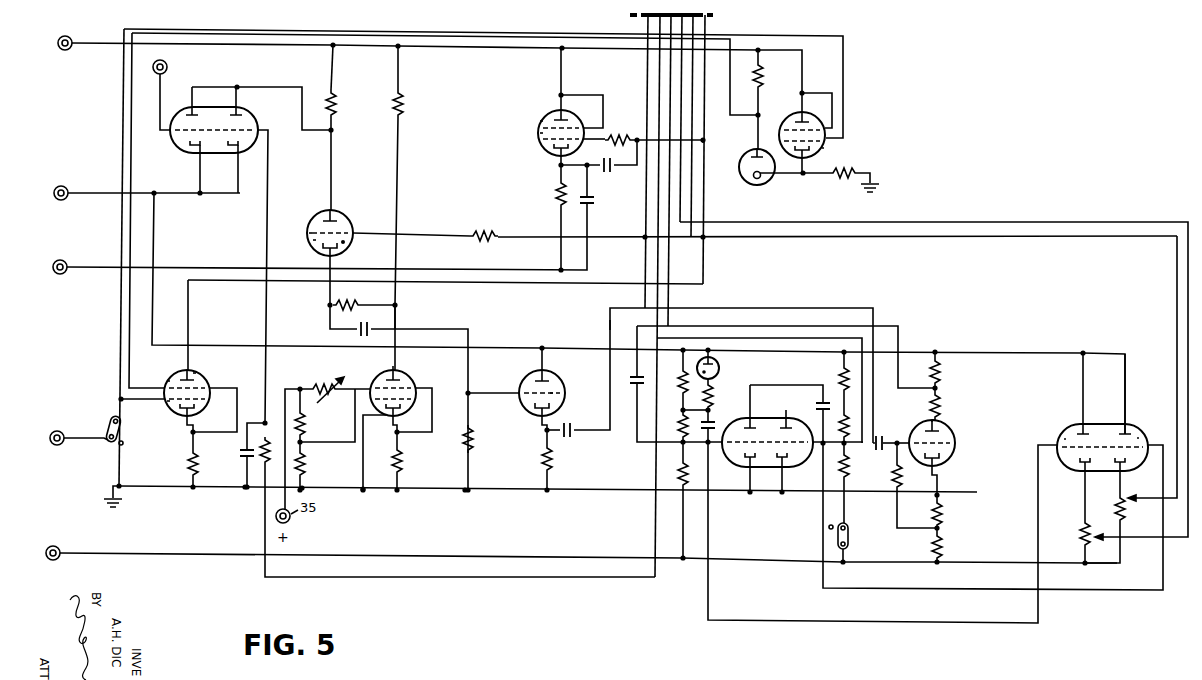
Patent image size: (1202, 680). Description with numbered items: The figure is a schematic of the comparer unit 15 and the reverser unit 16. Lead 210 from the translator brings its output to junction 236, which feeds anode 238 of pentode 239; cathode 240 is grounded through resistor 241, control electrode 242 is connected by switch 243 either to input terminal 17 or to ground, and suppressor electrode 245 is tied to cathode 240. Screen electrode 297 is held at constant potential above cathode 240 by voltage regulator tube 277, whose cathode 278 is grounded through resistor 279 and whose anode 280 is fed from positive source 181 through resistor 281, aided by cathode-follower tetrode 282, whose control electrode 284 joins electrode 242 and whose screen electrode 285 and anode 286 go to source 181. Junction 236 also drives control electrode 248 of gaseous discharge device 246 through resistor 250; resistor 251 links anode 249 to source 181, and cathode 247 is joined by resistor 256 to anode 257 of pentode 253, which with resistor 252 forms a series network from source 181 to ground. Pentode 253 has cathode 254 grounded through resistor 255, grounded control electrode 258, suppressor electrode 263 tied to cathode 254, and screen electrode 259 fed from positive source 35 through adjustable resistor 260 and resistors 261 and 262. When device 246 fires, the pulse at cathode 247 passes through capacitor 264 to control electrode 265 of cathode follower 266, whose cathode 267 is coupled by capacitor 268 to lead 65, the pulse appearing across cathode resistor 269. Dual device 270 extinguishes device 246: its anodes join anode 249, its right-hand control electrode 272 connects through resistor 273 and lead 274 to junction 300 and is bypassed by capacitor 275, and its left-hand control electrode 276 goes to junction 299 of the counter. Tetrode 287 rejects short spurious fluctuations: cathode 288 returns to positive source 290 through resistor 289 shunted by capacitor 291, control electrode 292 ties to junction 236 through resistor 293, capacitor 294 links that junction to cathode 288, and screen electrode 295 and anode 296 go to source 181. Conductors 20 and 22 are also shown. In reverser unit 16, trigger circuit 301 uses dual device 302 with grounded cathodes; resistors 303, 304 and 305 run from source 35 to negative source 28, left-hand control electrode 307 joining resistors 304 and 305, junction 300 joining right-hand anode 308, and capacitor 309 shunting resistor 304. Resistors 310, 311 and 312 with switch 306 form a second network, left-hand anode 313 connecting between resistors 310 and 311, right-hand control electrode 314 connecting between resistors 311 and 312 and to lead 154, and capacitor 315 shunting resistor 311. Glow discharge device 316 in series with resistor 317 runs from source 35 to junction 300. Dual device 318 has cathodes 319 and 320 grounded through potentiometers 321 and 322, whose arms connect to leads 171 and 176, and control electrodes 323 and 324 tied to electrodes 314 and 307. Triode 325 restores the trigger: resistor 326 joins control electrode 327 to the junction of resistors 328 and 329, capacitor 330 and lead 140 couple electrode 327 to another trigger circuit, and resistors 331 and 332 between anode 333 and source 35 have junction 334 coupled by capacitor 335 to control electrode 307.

The first circuit section 15 is at (370, 173).
The reverser unit 16 is at (945, 328).
The input terminal 17 is at (79, 448).
The conductor 20 is at (690, 44).
The conductor 22 is at (697, 56).
The negative potential source 28 is at (58, 547).
The positive potential source 35 is at (66, 187).
The lead 65 is at (608, 325).
The lead 140 is at (762, 311).
The lead 154 is at (762, 340).
The lead 171 is at (1175, 327).
The lead 176 is at (1186, 345).
The positive potential source 181 is at (76, 36).
The lead 210 is at (222, 281).
The junction 236 is at (642, 241).
The anode 238 is at (170, 375).
The electron discharge device 239 is at (168, 380).
The cathode 240 is at (186, 410).
The resistor 241 is at (188, 455).
The control electrode 242 is at (168, 401).
The switch 243 is at (107, 428).
The suppressor electrode 245 is at (195, 372).
The gaseous discharge device 246 is at (311, 240).
The cathode 247 is at (335, 252).
The control electrode 248 is at (310, 230).
The anode 249 is at (328, 216).
The resistor 250 is at (484, 230).
The resistor 251 is at (338, 100).
The resistor 252 is at (403, 102).
The electron discharge device 253 is at (332, 378).
The cathode 254 is at (376, 454).
The resistor 255 is at (404, 460).
The resistor 256 is at (362, 296).
The anode 257 is at (398, 372).
The control electrode 258 is at (408, 425).
The screen electrode 259 is at (400, 392).
The adjustable resistor 260 is at (300, 388).
The resistor 261 is at (308, 424).
The resistor 262 is at (308, 468).
The suppressor electrode 263 is at (392, 375).
The capacitor 264 is at (355, 333).
The control electrode 265 is at (542, 378).
The electron discharge device 266 is at (552, 392).
The cathode 267 is at (538, 413).
The capacitor 268 is at (570, 428).
The cathode resistor 269 is at (540, 455).
The dual electron discharge device 270 is at (217, 150).
The right-hand control electrode 272 is at (245, 120).
The resistor 273 is at (255, 465).
The lead 274 is at (468, 580).
The capacitor 275 is at (245, 456).
The left-hand control electrode 276 is at (182, 132).
The voltage regulator tube 277 is at (740, 180).
The cathode 278 is at (759, 180).
The resistor 279 is at (850, 181).
The anode 280 is at (720, 140).
The resistor 281 is at (762, 72).
The electron discharge device 282 is at (796, 134).
The control electrode 284 is at (825, 148).
The screen electrode 285 is at (826, 128).
The anode 286 is at (804, 92).
The electron discharge device 287 is at (540, 120).
The cathode 288 is at (538, 157).
The resistor 289 is at (555, 195).
The source of positive potential 290 is at (66, 263).
The capacitor 291 is at (596, 205).
The control electrode 292 is at (540, 133).
The resistor 293 is at (618, 135).
The capacitor 294 is at (612, 170).
The screen electrode 295 is at (582, 111).
The anode 296 is at (557, 102).
The screen electrode 297 is at (213, 411).
The junction 299 is at (175, 91).
The junction 300 is at (681, 409).
The trigger circuit 301 is at (770, 375).
The dual electron discharge device 302 is at (765, 470).
The resistor 303 is at (680, 382).
The resistor 304 is at (680, 430).
The resistor 305 is at (680, 476).
The SPST switch 306 is at (848, 540).
The left-hand control electrode 307 is at (736, 480).
The right-hand anode 308 is at (772, 426).
The capacitor 309 is at (737, 474).
The resistor 310 is at (840, 378).
The resistor 311 is at (857, 485).
The resistor 312 is at (920, 483).
The left-hand anode 313 is at (724, 397).
The right-hand control electrode 314 is at (800, 466).
The capacitor 315 is at (822, 406).
The glow discharge device 316 is at (716, 374).
The resistor 317 is at (682, 413).
The dual electron discharge device 318 is at (1100, 428).
The cathode 319 is at (1122, 470).
The cathode 320 is at (1078, 470).
The potentiometer 321 is at (1120, 500).
The potentiometer 322 is at (1080, 540).
The control electrode 323 is at (1137, 437).
The control electrode 324 is at (1066, 438).
The electron discharge device 325 is at (952, 452).
The resistor 326 is at (900, 475).
The control electrode 327 is at (950, 425).
The resistor 328 is at (943, 512).
The resistor 329 is at (943, 544).
The capacitor 330 is at (888, 438).
The resistor 331 is at (940, 408).
The resistor 332 is at (940, 373).
The anode 333 is at (928, 429).
The junction 334 is at (938, 389).
The capacitor 335 is at (676, 384).